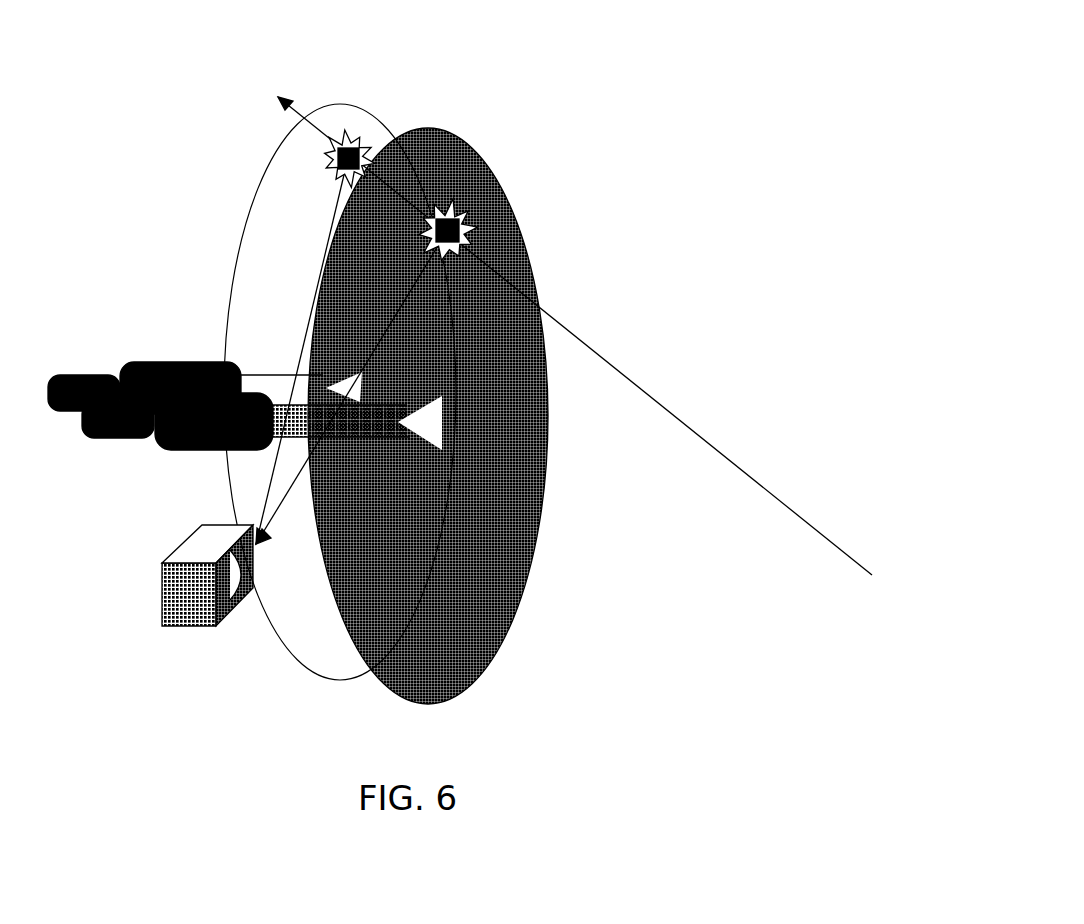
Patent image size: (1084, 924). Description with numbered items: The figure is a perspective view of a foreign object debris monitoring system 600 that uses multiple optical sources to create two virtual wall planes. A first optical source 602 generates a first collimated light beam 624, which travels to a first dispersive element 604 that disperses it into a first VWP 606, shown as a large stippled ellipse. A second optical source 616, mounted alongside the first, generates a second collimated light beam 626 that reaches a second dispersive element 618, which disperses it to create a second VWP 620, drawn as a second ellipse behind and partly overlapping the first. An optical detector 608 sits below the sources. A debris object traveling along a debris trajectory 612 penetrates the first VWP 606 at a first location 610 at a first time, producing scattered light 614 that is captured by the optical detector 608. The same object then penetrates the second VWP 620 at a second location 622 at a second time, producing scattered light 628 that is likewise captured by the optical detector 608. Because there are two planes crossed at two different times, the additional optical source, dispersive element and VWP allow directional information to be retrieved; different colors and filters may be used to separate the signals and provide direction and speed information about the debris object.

The FOD monitoring system 600 is at (812, 36).
The first optical source 602 is at (160, 408).
The first dispersive element 604 is at (445, 386).
The first VWP 606 is at (527, 573).
The optical detector 608 is at (162, 580).
The first location 610 is at (465, 214).
The debris trajectory 612 is at (605, 358).
The scattered light 614 is at (276, 513).
The second optical source 616 is at (97, 375).
The second dispersive element 618 is at (340, 366).
The second VWP 620 is at (236, 252).
The second location 622 is at (362, 146).
The first collimated light beam 624 is at (385, 400).
The second collimated light beam 626 is at (258, 373).
The scattered light 628 is at (266, 495).